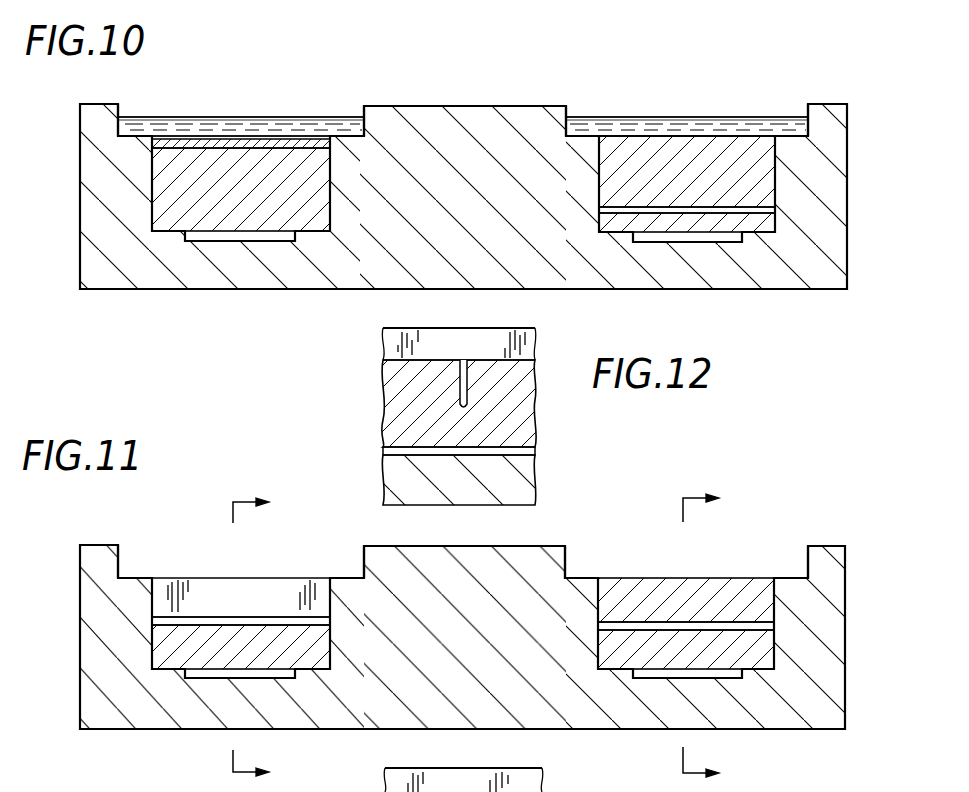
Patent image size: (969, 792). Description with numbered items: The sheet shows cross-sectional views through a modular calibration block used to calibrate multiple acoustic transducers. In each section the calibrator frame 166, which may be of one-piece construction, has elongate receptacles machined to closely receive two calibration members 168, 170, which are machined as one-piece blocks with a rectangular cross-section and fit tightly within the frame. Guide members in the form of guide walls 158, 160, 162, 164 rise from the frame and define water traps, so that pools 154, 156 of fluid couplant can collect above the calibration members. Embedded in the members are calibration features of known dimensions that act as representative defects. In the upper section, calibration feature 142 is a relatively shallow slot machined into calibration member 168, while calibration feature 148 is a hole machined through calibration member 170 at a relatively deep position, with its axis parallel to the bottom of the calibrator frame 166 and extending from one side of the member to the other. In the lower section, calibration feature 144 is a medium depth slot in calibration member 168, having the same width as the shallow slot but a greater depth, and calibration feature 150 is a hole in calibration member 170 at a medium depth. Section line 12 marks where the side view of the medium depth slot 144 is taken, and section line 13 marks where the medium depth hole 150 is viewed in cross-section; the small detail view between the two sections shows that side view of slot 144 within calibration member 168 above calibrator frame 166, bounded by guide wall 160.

In FIG. 10, the calibration feature 142 is at (152, 146).
In FIG. 12, the calibration feature 144 is at (462, 380).
In FIG. 11, the calibration feature 144 is at (164, 608).
In FIG. 10, the calibration feature 148 is at (778, 210).
In FIG. 11, the calibration feature 150 is at (773, 625).
In FIG. 10, the pool 154 is at (255, 119).
In FIG. 10, the pool 156 is at (641, 120).
In FIG. 10, the guide wall 158 is at (122, 130).
In FIG. 11, the guide wall 158 is at (120, 563).
In FIG. 10, the guide wall 160 is at (367, 127).
In FIG. 12, the guide wall 160 is at (525, 343).
In FIG. 11, the guide wall 160 is at (362, 563).
In FIG. 10, the guide wall 162 is at (564, 126).
In FIG. 11, the guide wall 162 is at (566, 563).
In FIG. 10, the guide wall 164 is at (806, 120).
In FIG. 11, the guide wall 164 is at (806, 560).
In FIG. 10, the calibrator frame 166 is at (372, 258).
In FIG. 12, the calibrator frame 166 is at (508, 484).
In FIG. 11, the calibrator frame 166 is at (392, 703).
In FIG. 10, the calibration member 168 is at (160, 202).
In FIG. 12, the calibration member 168 is at (515, 418).
In FIG. 11, the calibration member 168 is at (160, 648).
In FIG. 10, the calibration member 170 is at (753, 175).
In FIG. 11, the calibration member 170 is at (758, 653).
In FIG. 11, the section line 12 is at (267, 639).
In FIG. 11, the section line 13 is at (718, 639).